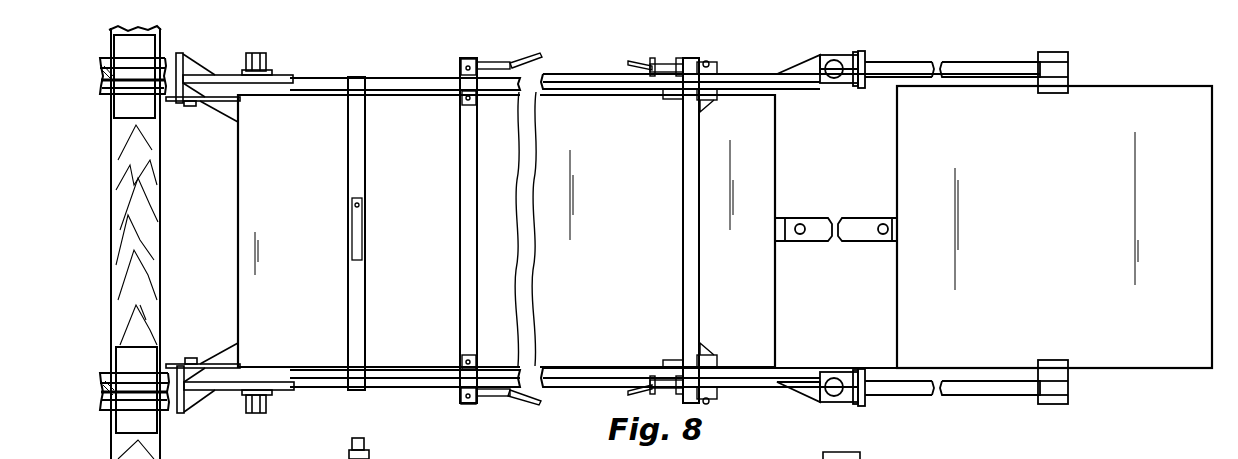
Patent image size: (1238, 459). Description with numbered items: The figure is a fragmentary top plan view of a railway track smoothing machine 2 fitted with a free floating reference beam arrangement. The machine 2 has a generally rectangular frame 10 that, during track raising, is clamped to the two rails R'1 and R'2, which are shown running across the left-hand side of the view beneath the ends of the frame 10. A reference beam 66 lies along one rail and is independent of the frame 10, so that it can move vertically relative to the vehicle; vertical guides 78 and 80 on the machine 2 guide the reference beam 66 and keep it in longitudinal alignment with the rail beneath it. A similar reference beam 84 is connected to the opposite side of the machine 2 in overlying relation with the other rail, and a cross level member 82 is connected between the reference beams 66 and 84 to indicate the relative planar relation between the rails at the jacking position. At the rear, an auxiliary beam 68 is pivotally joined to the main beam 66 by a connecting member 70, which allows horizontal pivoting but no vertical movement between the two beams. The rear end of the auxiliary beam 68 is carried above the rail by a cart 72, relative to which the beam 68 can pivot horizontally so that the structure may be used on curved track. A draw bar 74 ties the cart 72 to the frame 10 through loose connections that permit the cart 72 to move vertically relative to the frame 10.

The rail R'2 is at (102, 77).
The rail R'1 is at (109, 392).
The frame 10 is at (238, 205).
The railway track smoothing machine 2 is at (780, 160).
The cart 72 is at (896, 153).
The cross level member 82 is at (360, 273).
The vertical guide 80 is at (460, 90).
The vertical guide 78 is at (712, 70).
The reference beam 84 is at (608, 74).
The reference beam 66 is at (608, 386).
The connecting member 70 is at (836, 56).
The auxiliary beam 68 is at (958, 396).
The draw bar 74 is at (818, 216).